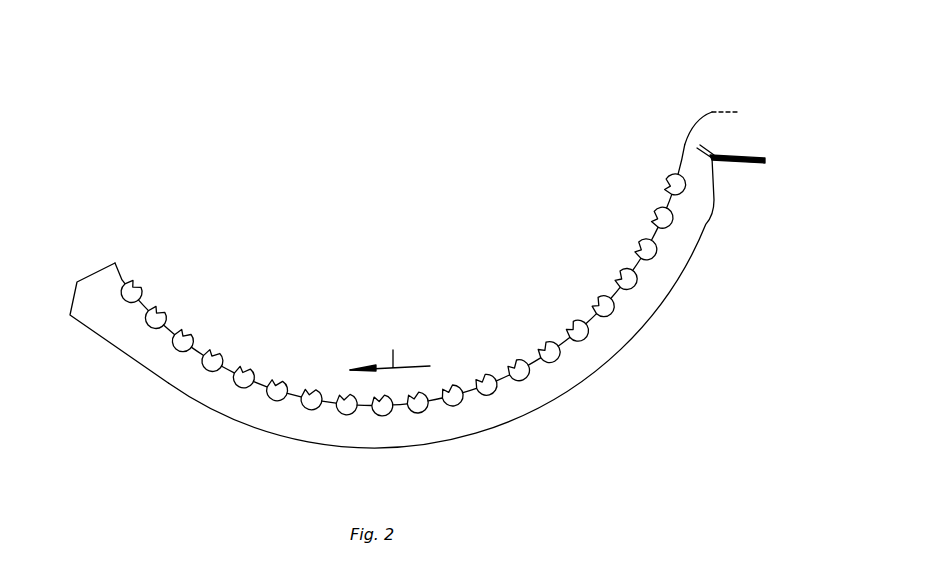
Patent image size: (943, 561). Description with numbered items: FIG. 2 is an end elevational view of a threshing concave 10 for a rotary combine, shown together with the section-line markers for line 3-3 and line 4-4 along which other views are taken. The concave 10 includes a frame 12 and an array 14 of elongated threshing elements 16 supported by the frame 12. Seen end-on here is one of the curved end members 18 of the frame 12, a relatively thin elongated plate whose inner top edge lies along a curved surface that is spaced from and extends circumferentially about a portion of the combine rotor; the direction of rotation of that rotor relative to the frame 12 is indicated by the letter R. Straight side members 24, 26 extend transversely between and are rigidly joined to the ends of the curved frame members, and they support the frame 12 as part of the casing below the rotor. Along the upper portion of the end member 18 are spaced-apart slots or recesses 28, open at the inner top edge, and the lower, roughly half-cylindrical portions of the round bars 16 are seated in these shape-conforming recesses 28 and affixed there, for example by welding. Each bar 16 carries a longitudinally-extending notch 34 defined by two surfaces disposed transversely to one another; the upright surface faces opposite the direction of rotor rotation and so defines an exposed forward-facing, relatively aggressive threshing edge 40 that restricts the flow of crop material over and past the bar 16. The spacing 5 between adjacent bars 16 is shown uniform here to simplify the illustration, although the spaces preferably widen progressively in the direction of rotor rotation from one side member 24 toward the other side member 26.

The section line 3- 3 is at (50, 417).
The section line 4- 4 is at (730, 67).
The gap between teeth 5 is at (230, 368).
The threshing concave 10 is at (376, 290).
The frame 12 is at (644, 335).
The array of elongated threshing elements 14 is at (527, 292).
The elongated threshing element 16 is at (418, 414).
The end member 18 is at (310, 427).
The side member 24 is at (712, 112).
The side member 26 is at (88, 276).
The slots or recesses 28 is at (273, 398).
The longitudinally-extending notch 34 is at (167, 314).
The threshing edge 40 is at (275, 382).